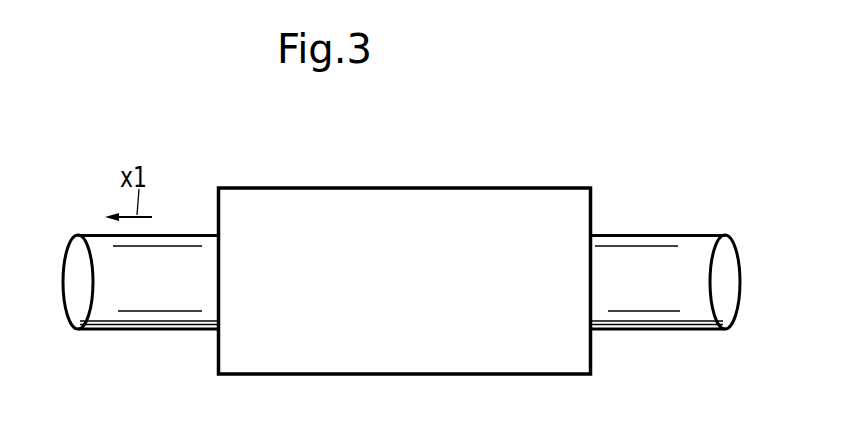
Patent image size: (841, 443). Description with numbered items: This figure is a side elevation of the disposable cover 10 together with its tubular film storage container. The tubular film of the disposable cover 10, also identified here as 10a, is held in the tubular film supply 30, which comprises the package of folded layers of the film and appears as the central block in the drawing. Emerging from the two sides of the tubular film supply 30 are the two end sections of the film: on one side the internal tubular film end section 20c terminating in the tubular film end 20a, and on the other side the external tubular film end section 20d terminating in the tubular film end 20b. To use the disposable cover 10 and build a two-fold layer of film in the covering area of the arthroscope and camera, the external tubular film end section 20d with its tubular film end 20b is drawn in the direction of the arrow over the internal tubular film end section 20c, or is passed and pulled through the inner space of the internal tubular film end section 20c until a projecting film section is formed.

The disposable cover 10 is at (397, 168).
The member segment 10a is at (401, 251).
The tubular film supply 30 is at (512, 203).
The tubular film end 20a is at (730, 329).
The tubular film end 20b is at (72, 327).
The internal tubular film end section 20c is at (653, 257).
The external tubular film end section 20d is at (168, 319).